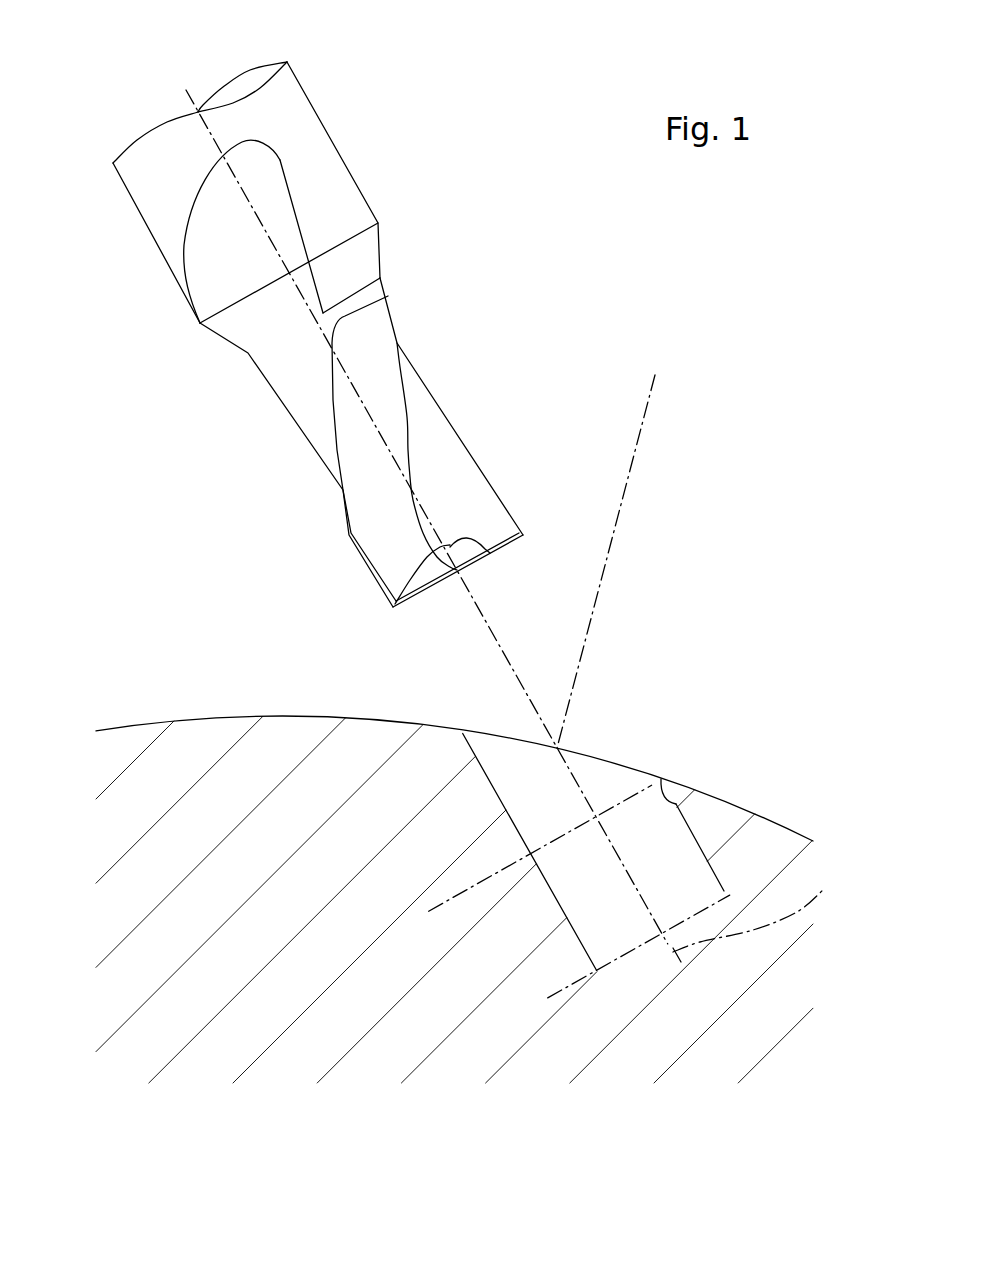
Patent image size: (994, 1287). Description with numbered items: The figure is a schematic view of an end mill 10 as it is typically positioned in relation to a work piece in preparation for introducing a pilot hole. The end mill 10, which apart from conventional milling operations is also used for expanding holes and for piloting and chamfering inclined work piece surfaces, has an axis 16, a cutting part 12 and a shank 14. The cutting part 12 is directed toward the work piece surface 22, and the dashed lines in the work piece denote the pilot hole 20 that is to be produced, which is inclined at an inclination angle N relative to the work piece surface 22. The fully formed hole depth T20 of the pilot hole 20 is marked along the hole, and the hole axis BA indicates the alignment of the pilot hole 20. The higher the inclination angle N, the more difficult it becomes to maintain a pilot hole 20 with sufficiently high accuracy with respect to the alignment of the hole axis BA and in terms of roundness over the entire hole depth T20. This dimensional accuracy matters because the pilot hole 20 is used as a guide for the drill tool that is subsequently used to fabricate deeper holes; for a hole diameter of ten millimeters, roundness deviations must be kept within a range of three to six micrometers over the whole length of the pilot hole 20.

The end mill 10 is at (369, 491).
The cutting part 12 is at (197, 385).
The shank 14 is at (232, 202).
The axis 16 is at (248, 187).
The pilot hole 20 is at (668, 780).
The work piece surface 22 is at (204, 715).
The inclination angle N is at (595, 596).
The hole depth T20 is at (540, 1002).
The hole axis BA is at (764, 908).